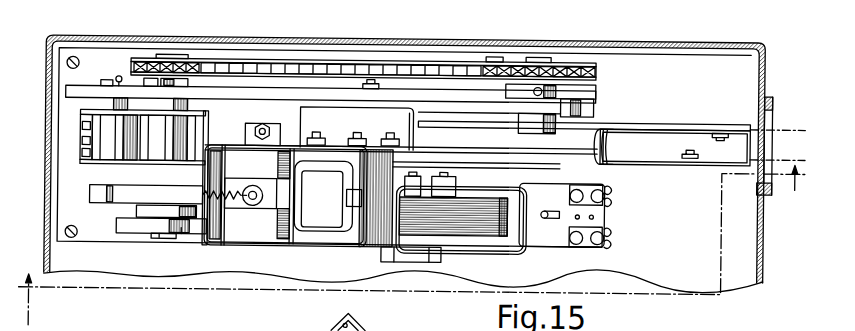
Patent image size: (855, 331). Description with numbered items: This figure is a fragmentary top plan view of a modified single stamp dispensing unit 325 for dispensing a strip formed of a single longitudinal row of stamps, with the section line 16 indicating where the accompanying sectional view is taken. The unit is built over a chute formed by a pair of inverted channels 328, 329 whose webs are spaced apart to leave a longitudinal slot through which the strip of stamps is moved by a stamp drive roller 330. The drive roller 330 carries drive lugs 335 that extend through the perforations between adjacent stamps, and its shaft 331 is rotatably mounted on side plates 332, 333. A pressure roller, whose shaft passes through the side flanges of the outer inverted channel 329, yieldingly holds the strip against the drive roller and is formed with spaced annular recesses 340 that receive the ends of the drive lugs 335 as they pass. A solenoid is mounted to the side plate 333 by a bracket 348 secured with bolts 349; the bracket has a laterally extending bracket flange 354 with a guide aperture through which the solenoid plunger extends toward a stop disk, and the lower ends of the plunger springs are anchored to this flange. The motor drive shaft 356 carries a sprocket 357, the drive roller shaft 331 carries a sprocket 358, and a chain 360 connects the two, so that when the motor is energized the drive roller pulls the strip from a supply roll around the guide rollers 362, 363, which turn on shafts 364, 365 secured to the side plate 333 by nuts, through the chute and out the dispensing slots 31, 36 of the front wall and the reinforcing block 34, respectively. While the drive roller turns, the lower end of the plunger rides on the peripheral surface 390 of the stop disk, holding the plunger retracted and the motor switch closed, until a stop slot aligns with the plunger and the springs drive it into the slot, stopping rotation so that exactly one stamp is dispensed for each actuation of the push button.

The section line 16 is at (411, 244).
The dispensing slot 31 is at (768, 96).
The reinforcing block 34 is at (767, 193).
The dispensing slot 36 is at (769, 114).
The single stamp dispensing unit 325 is at (150, 263).
The inverted channel 328 is at (668, 124).
The outer inverted channel 329 is at (660, 106).
The stamp drive roller 330 is at (98, 152).
The drive roller shaft 331 is at (163, 240).
The side plate 332 is at (182, 230).
The side plate 333 is at (222, 96).
The drive lugs 335 is at (252, 134).
The annular recesses 340 is at (82, 128).
The bracket 348 is at (343, 112).
The bolts 349 is at (394, 134).
The bracket flange 354 is at (207, 217).
The drive shaft 356 is at (538, 60).
The sprocket 357 is at (495, 60).
The sprocket 358 is at (167, 58).
The chain 360 is at (438, 63).
The guide roller 362 is at (110, 126).
The guide roller 363 is at (172, 149).
The shaft 364 is at (118, 79).
The shaft 365 is at (163, 62).
The peripheral surface 390 is at (123, 196).